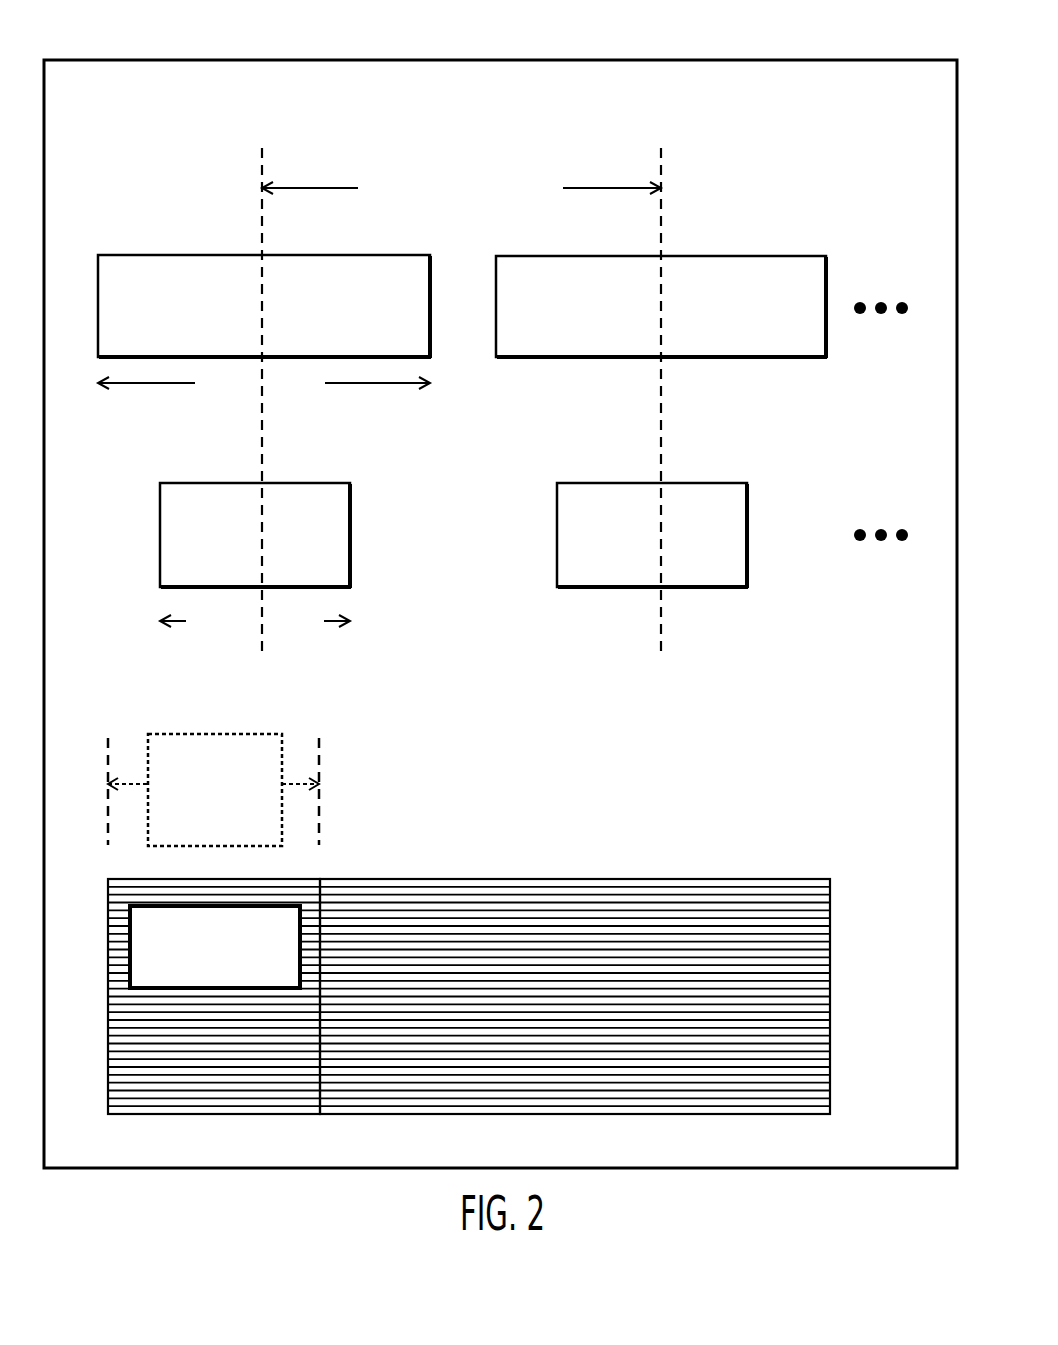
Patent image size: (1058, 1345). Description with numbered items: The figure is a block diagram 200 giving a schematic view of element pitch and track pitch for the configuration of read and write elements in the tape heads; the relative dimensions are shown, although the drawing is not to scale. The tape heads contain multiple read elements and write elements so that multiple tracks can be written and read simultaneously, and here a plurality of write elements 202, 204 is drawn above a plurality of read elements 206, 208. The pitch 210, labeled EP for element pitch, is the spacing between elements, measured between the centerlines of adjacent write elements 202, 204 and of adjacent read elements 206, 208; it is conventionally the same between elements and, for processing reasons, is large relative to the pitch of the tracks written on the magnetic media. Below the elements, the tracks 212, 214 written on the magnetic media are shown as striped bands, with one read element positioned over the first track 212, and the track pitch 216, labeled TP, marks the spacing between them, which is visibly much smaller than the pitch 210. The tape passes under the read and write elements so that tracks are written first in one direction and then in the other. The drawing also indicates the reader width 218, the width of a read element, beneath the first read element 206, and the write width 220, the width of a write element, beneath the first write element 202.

The block diagram 200 is at (120, 60).
The write element 202 is at (138, 255).
The write element 204 is at (538, 256).
The read element 206 is at (200, 482).
The read element 208 is at (598, 482).
The pitch 210 is at (455, 166).
The track 212 is at (202, 1117).
The track 214 is at (562, 1117).
The track pitch 216 is at (218, 733).
The reader width 218 is at (243, 638).
The write width 220 is at (252, 400).